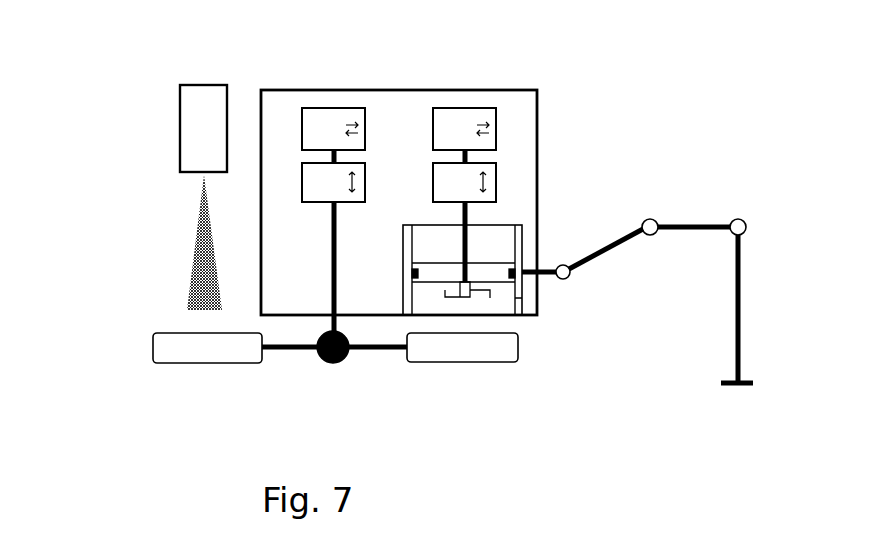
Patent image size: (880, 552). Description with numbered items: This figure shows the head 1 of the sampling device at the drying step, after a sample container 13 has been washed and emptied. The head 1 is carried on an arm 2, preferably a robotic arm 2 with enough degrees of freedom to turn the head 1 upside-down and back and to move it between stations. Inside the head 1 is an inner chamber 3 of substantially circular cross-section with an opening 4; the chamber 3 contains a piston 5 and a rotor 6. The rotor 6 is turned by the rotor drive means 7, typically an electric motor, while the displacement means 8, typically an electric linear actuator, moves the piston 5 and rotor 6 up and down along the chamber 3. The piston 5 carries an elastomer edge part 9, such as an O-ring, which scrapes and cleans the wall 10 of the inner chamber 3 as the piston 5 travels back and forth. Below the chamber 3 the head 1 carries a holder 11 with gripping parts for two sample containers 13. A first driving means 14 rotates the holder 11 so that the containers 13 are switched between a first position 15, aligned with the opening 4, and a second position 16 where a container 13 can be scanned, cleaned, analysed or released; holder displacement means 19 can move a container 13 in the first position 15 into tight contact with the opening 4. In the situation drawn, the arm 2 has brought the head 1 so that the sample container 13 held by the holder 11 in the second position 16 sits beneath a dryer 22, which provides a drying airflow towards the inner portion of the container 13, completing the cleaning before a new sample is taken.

The head 1 is at (522, 118).
The arm 2 is at (712, 193).
The inner chamber 3 is at (495, 235).
The opening 4 is at (503, 318).
The piston 5 is at (500, 270).
The rotor 6 is at (445, 297).
The rotor drive means 7 is at (465, 118).
The displacement means 8 is at (433, 173).
The edge part 9 is at (517, 270).
The wall 10 is at (522, 298).
The holder 11 is at (310, 380).
The sample container 13 is at (182, 355).
The first driving means 14 is at (335, 118).
The first position 15 is at (451, 385).
The second position 16 is at (202, 400).
The holder displacement means 19 is at (305, 170).
The dryer 22 is at (188, 115).